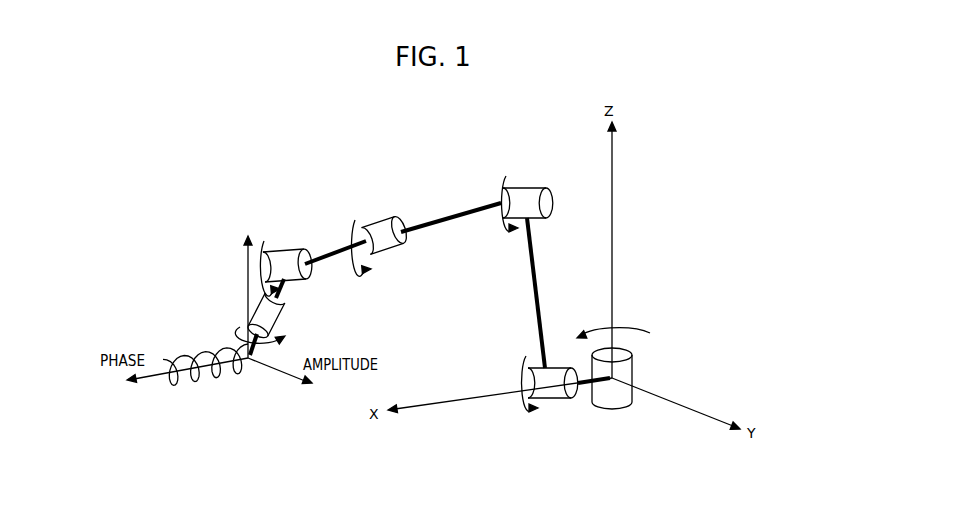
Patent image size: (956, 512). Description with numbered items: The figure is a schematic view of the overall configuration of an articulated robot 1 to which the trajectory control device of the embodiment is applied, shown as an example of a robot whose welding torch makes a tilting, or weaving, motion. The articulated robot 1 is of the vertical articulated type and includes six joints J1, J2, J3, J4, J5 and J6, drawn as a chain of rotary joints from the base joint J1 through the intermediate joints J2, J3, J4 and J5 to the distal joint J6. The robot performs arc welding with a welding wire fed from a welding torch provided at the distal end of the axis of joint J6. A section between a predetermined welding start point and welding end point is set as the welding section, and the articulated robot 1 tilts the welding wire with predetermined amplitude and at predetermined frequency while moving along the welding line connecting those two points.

The articulated robot 1 is at (393, 153).
The joint J1 is at (615, 368).
The joint J2 is at (550, 387).
The joint J3 is at (527, 202).
The joint J4 is at (381, 246).
The joint J5 is at (298, 268).
The joint J6 is at (269, 318).